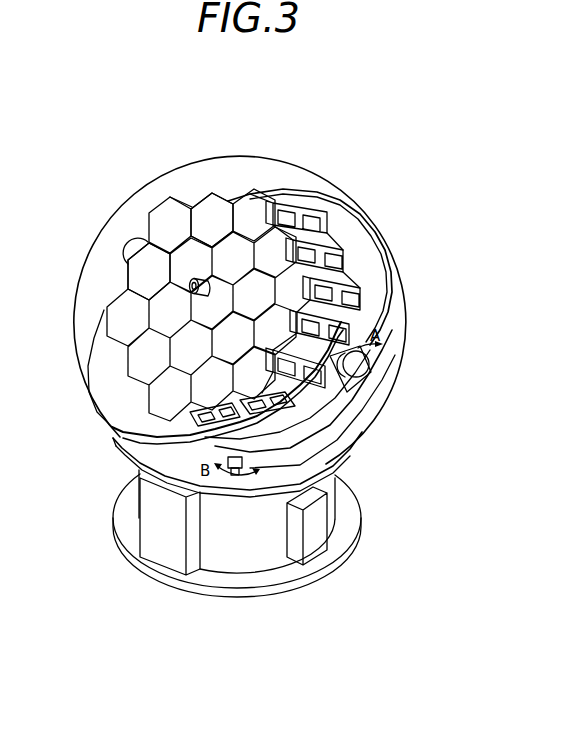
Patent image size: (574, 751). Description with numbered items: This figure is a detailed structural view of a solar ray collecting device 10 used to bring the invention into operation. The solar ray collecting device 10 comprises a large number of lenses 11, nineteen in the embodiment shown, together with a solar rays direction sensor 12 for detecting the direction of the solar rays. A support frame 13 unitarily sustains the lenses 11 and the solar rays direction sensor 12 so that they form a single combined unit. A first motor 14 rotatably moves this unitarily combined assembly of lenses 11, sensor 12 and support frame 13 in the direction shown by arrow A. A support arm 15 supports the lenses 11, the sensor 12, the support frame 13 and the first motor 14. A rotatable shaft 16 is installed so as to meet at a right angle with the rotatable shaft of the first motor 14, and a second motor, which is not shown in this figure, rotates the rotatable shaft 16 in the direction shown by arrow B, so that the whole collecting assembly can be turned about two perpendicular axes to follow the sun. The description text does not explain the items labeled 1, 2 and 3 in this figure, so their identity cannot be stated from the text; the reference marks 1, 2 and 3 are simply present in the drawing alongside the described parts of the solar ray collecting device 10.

The base 1 is at (231, 567).
The spherical housing 2 is at (393, 298).
The turntable plate 3 is at (113, 445).
The solar ray collecting device 10 is at (178, 190).
The lenses 11 is at (215, 214).
The solar rays direction sensor 12 is at (211, 289).
The support frame 13 is at (281, 194).
The first motor 14 is at (362, 356).
The support arm 15 is at (365, 410).
The rotatable shaft 16 is at (237, 477).